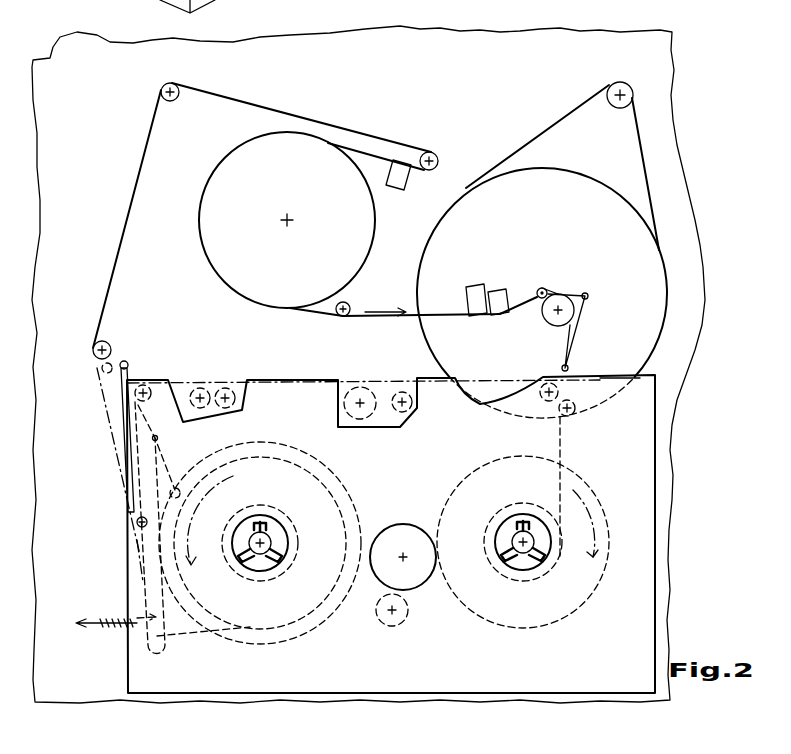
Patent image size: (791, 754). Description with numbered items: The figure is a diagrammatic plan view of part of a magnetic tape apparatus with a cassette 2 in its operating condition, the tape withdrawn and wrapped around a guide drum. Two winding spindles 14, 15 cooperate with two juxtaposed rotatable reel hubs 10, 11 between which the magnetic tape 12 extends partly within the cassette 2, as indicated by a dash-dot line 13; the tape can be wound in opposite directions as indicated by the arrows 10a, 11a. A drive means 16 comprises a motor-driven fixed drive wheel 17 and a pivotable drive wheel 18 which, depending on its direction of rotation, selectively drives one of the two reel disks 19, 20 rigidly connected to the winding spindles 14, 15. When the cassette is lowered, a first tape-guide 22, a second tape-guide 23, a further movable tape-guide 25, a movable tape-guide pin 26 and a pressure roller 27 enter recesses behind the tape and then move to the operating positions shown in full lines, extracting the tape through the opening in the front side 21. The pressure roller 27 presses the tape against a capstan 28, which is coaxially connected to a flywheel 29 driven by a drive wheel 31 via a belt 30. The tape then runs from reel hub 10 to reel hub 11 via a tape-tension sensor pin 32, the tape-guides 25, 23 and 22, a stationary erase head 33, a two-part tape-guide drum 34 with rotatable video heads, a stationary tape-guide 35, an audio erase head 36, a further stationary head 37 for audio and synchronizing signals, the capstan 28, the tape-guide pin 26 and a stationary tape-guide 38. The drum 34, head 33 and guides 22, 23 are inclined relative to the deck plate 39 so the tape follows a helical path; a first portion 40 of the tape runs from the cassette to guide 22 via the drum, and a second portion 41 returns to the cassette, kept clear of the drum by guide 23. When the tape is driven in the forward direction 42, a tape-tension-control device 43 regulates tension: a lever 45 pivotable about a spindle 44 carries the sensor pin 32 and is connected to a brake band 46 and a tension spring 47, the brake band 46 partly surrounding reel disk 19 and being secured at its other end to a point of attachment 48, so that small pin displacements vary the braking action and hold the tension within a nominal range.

The cassette 2 is at (658, 441).
The reel hub 10 is at (288, 545).
The arrow 10a is at (207, 494).
The reel hub 11 is at (486, 545).
The arrow 11a is at (583, 506).
The magnetic tape 12 is at (562, 446).
The dash-dot line 13 is at (272, 386).
The winding spindle 14 is at (260, 550).
The winding spindle 15 is at (523, 550).
The drive means 16 is at (421, 603).
The fixed drive wheel 17 is at (392, 627).
The pivotable drive wheel 18 is at (400, 525).
The reel disk 19 is at (330, 614).
The reel disk 20 is at (495, 617).
The front side 21 is at (603, 376).
The first tape-guide 22 is at (437, 154).
The second tape-guide 23 is at (160, 84).
The further movable tape-guide 25 is at (92, 353).
The movable tape-guide pin 26 is at (590, 294).
The pressure roller 27 is at (556, 326).
The capstan 28 is at (544, 288).
The flywheel 29 is at (582, 180).
The belt 30 is at (556, 124).
The drive wheel 31 is at (620, 82).
The tape-tension sensor pin 32 is at (128, 360).
The stationary magnetic head 33 is at (408, 182).
The tape-guide drum 34 is at (226, 165).
The stationary tape-guide 35 is at (340, 316).
The stationary magnetic head 36 is at (470, 292).
The further stationary magnetic head 37 is at (497, 288).
The stationary tape-guide 38 is at (572, 358).
The deck plate 39 is at (485, 32).
The first portion of the magnetic tape 40 is at (442, 318).
The second portion of the magnetic tape 41 is at (148, 130).
The forward direction 42 is at (378, 309).
The tape-tension-control device 43 is at (140, 642).
The spindle 44 is at (137, 520).
The lever 45 is at (143, 580).
The brake band 46 is at (180, 632).
The tension spring 47 is at (100, 618).
The point of attachment 48 is at (176, 487).